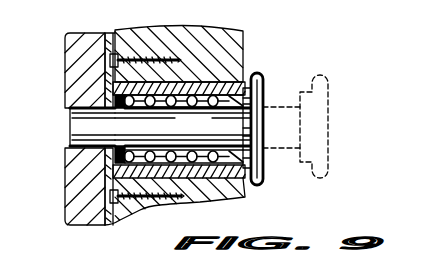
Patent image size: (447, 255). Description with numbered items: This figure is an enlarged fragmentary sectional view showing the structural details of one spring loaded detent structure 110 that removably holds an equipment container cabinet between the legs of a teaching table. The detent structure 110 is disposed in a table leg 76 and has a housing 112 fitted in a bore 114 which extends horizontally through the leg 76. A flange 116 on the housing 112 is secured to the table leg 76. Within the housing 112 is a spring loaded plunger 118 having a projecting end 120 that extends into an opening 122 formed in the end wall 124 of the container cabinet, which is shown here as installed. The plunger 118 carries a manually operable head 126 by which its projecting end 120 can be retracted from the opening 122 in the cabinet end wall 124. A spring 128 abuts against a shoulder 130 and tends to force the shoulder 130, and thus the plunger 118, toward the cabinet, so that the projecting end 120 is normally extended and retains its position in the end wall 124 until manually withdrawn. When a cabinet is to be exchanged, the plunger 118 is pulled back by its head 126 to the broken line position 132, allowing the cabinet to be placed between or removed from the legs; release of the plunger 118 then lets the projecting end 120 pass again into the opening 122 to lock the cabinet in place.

The leg 76 is at (195, 42).
The spring loaded detent structure 110 is at (266, 63).
The housing 112 is at (205, 90).
The bore 114 is at (243, 180).
The flange 116 is at (103, 32).
The spring loaded plunger 118 is at (182, 127).
The projecting end 120 is at (77, 130).
The opening 122 is at (68, 100).
The wall 124 is at (73, 202).
The manually operable head 126 is at (264, 92).
The spring 128 is at (188, 162).
The shoulder 130 is at (110, 155).
The broken line position 132 is at (328, 105).